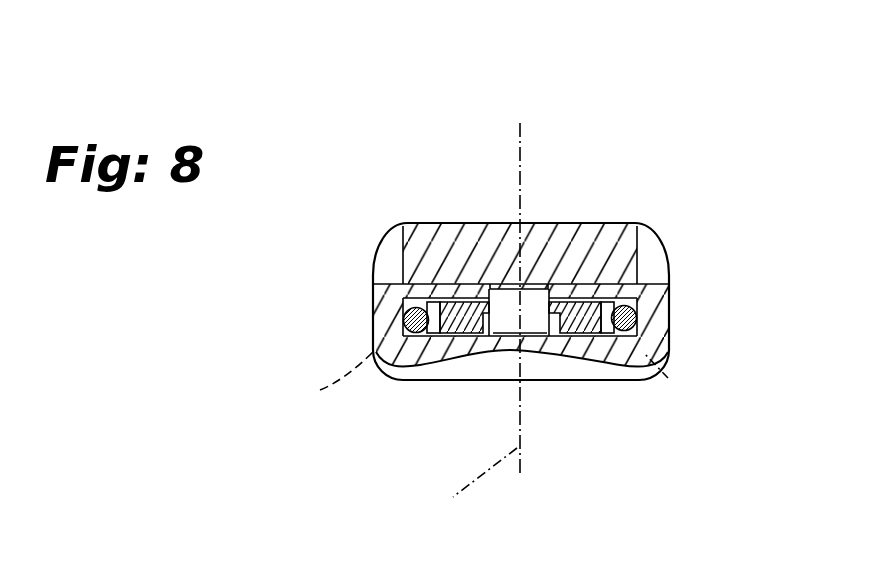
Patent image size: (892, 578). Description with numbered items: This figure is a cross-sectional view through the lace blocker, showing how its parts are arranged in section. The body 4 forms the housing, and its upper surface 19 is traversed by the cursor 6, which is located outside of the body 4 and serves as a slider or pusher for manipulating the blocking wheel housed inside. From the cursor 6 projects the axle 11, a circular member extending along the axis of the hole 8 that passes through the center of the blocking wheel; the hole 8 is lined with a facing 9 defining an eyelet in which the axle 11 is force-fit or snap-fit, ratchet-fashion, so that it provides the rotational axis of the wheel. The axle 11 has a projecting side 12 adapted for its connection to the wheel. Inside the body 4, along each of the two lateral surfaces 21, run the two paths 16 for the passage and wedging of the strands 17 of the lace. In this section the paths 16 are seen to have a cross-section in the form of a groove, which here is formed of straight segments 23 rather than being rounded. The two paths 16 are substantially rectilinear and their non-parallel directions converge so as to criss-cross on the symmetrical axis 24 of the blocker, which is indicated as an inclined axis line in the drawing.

The body 4 is at (668, 291).
The cursor 6 is at (603, 222).
The hole 8 is at (503, 286).
The facing 9 is at (490, 315).
The axle 11 is at (540, 320).
The projecting side 12 is at (533, 314).
The paths 16 is at (320, 390).
The strands 17 is at (400, 302).
The upper surface 19 is at (554, 172).
The lateral surfaces 21 is at (405, 320).
The straight segments 23 is at (432, 320).
The symmetrical axis 24 is at (452, 500).